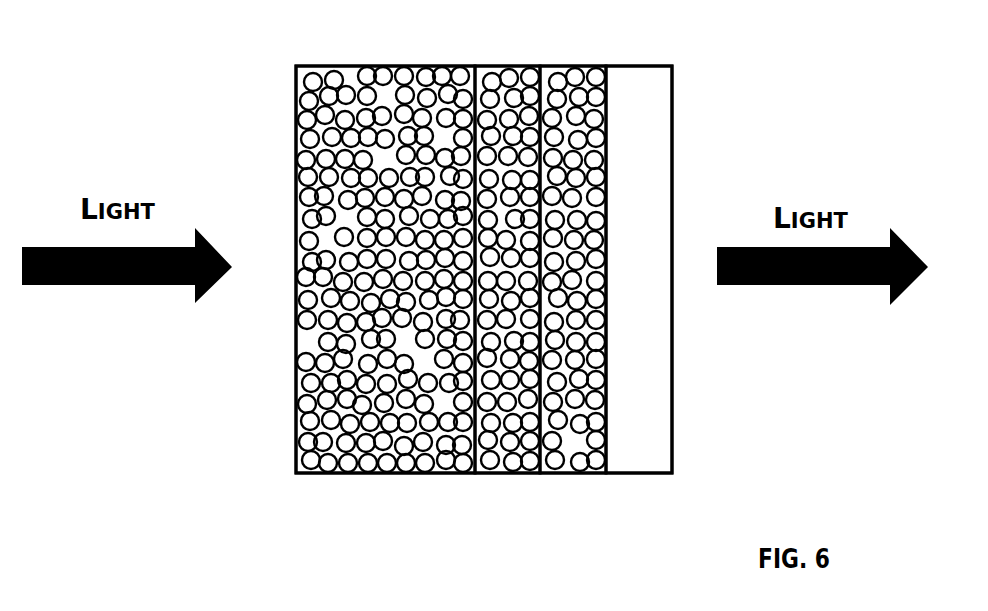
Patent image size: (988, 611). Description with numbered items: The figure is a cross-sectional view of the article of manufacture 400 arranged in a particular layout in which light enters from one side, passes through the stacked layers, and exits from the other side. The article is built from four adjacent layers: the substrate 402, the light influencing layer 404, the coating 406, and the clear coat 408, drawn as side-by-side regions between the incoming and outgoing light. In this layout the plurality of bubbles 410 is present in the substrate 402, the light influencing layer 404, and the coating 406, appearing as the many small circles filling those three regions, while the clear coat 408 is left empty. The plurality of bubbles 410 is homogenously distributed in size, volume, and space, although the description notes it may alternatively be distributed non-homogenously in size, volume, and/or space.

The article of manufacture 400 is at (693, 122).
The substrate 402 is at (385, 473).
The light influencing layer 404 is at (508, 473).
The coating 406 is at (578, 473).
The clear coat 408 is at (635, 473).
The plurality of bubbles 410 is at (313, 80).